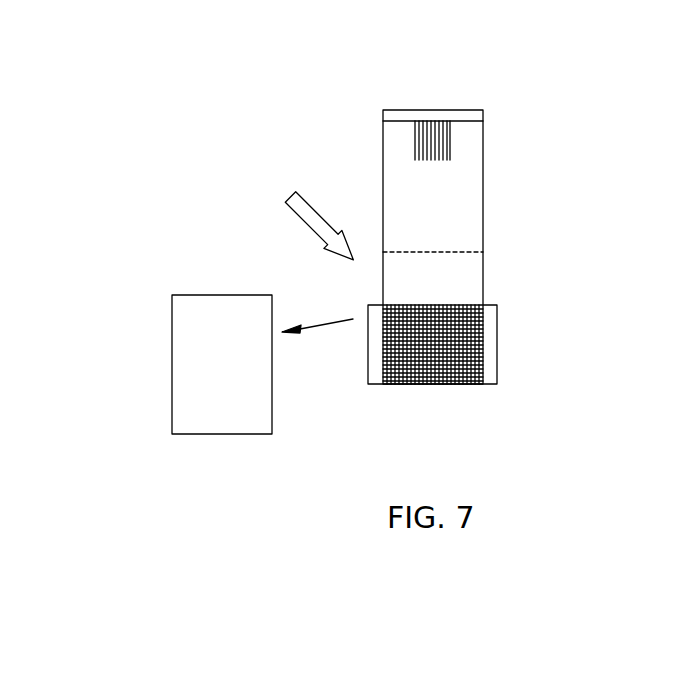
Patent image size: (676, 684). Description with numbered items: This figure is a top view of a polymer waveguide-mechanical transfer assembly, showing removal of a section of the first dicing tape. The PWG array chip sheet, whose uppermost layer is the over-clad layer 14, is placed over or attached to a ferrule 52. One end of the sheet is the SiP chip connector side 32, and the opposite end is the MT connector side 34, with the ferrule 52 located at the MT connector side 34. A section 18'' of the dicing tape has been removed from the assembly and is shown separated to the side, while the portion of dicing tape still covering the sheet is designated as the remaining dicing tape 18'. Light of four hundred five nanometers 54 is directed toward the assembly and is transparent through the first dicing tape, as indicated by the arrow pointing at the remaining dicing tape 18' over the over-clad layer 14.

The over-clad layer 14 is at (462, 289).
The SiP chip connector side 32 is at (454, 110).
The remaining dicing tape 18' is at (474, 211).
The ferrule 52 is at (487, 348).
The MT connector side 34 is at (450, 385).
The section of the dicing tape 18'' is at (169, 362).
The 405 nm light 54 is at (319, 212).